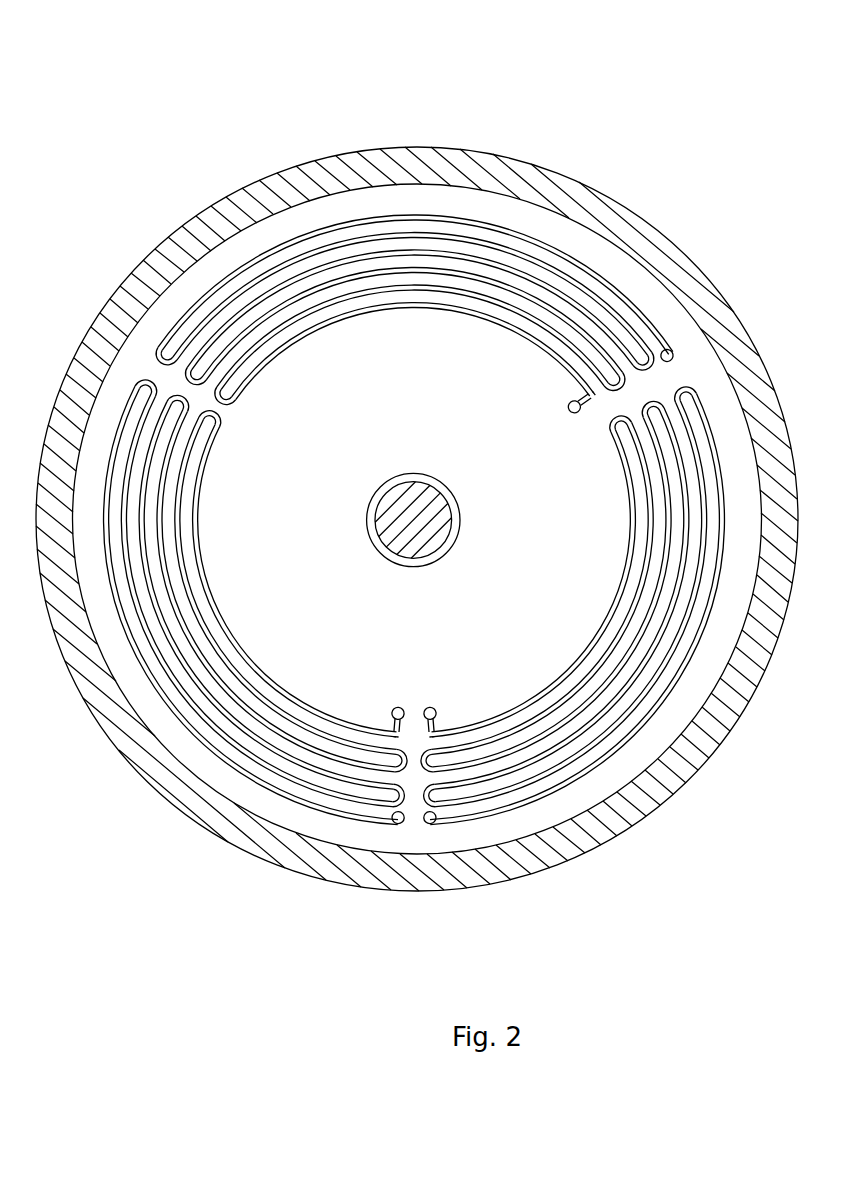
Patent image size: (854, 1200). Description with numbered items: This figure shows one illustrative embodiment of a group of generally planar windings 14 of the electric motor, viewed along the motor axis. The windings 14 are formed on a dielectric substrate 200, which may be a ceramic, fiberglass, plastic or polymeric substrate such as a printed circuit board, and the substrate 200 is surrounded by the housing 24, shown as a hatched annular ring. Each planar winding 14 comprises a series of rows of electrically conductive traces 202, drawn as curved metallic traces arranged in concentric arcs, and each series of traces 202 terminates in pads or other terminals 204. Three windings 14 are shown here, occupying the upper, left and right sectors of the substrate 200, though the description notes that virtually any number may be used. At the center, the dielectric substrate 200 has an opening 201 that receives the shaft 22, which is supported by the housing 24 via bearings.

The generally planar windings 14 is at (437, 118).
The housing 24 is at (257, 182).
The electrically conductive traces 202 is at (515, 228).
The dielectric substrate 200 is at (576, 247).
The terminals 204 is at (674, 352).
The opening 201 is at (450, 480).
The shaft 22 is at (440, 520).